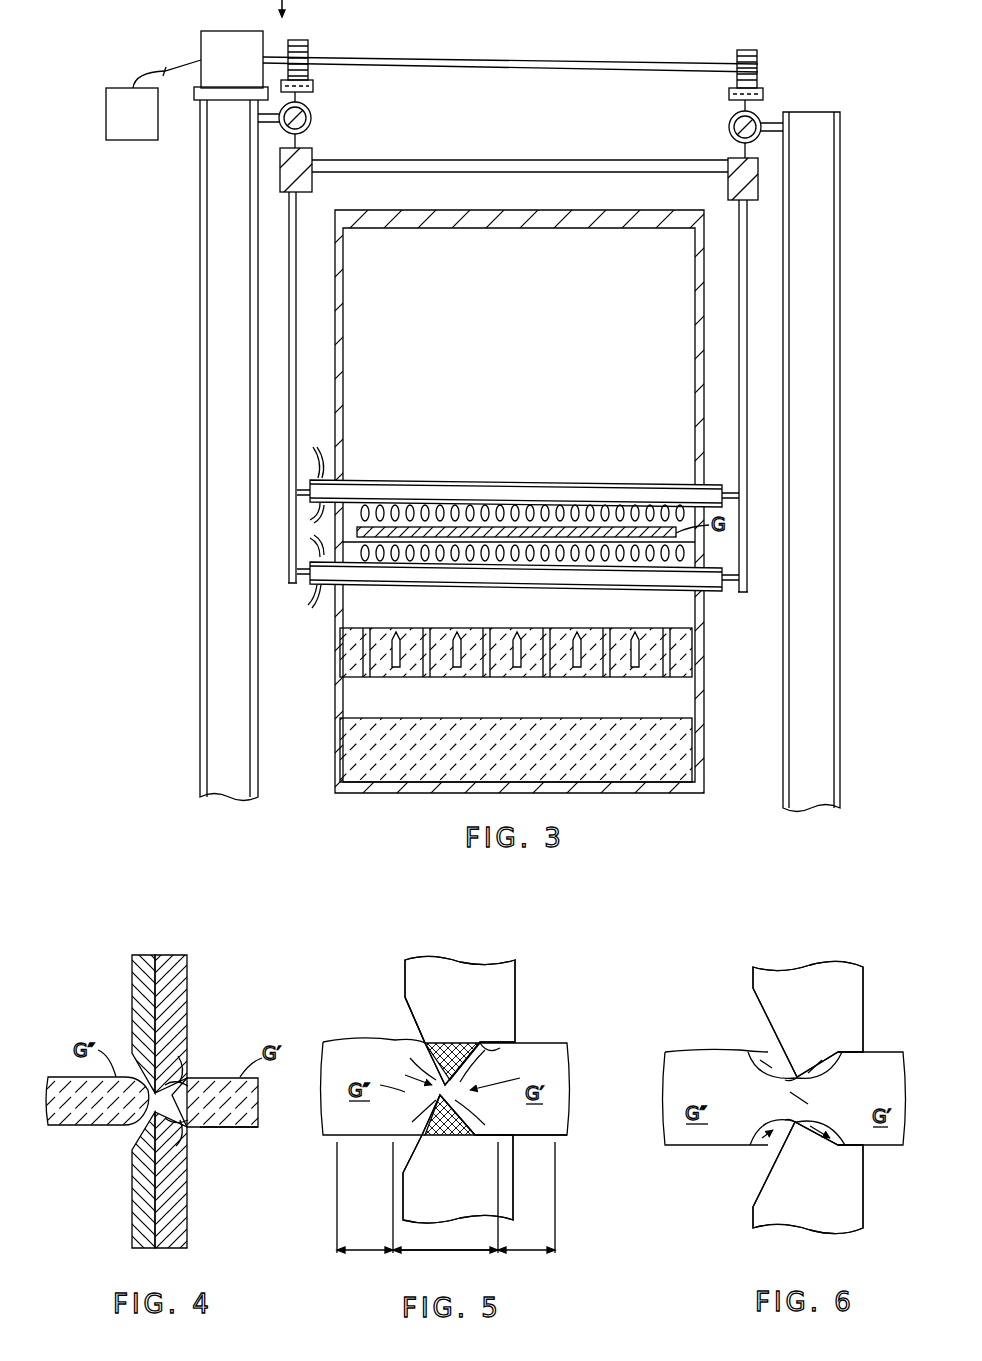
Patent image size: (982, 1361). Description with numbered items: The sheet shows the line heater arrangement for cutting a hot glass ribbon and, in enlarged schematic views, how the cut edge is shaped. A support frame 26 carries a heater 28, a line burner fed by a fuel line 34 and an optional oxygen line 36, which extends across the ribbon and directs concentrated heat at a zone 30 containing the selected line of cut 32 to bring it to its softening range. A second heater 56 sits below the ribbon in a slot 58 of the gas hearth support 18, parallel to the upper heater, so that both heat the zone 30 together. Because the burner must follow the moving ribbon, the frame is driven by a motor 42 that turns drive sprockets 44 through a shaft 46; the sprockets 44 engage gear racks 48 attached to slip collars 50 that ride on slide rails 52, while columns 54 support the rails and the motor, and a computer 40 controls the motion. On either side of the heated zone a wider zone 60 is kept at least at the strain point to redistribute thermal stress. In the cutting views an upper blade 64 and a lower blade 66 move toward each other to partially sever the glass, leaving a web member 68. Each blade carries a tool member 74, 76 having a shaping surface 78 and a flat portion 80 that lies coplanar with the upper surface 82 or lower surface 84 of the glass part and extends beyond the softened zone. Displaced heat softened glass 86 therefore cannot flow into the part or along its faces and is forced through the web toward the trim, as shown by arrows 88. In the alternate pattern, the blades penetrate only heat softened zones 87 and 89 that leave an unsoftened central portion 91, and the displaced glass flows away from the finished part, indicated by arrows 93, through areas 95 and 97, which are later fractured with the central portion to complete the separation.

In FIG. 3, the gas hearth support 18 is at (537, 677).
In FIG. 3, the support frame 26 is at (298, 215).
In FIG. 3, the heater 28 is at (530, 483).
In FIG. 5, the zone 30 is at (445, 1237).
In FIG. 3, the line of cut 32 is at (608, 527).
In FIG. 3, the fuel line 34 is at (312, 462).
In FIG. 3, the oxygen line 36 is at (310, 548).
In FIG. 3, the computer 40 is at (145, 124).
In FIG. 3, the motor 42 is at (201, 42).
In FIG. 3, the drive sprocket 44 is at (297, 40).
In FIG. 3, the shaft 46 is at (545, 57).
In FIG. 3, the gear rack 48 is at (313, 88).
In FIG. 3, the slip collar 50 is at (311, 114).
In FIG. 3, the slide rail 52 is at (303, 128).
In FIG. 3, the column 54 is at (200, 700).
In FIG. 3, the second heater 56 is at (567, 586).
In FIG. 3, the slot 58 is at (465, 628).
In FIG. 5, the zone 60 is at (446, 1197).
In FIG. 6, the zone 60 is at (708, 1082).
In FIG. 4, the upper blade 64 is at (132, 975).
In FIG. 5, the upper blade 64 is at (517, 972).
In FIG. 6, the upper blade 64 is at (873, 947).
In FIG. 4, the lower blade 66 is at (132, 1196).
In FIG. 5, the lower blade 66 is at (513, 1183).
In FIG. 6, the lower blade 66 is at (863, 1203).
In FIG. 4, the web member 68 is at (120, 1123).
In FIG. 4, the tool member 74 is at (187, 985).
In FIG. 5, the tool member 74 is at (497, 1016).
In FIG. 6, the tool member 74 is at (808, 1006).
In FIG. 4, the tool member 76 is at (187, 1226).
In FIG. 5, the tool member 76 is at (508, 1159).
In FIG. 6, the tool member 76 is at (808, 1193).
In FIG. 4, the shaping surface 78 is at (178, 1060).
In FIG. 5, the shaping surface 78 is at (477, 1055).
In FIG. 4, the flat portion 80 is at (190, 1082).
In FIG. 5, the flat portion 80 is at (505, 1048).
In FIG. 4, the upper surface 82 is at (258, 1080).
In FIG. 5, the upper surface 82 is at (565, 1044).
In FIG. 4, the lower surface 84 is at (250, 1127).
In FIG. 5, the lower surface 84 is at (533, 1138).
In FIG. 5, the heat softened glass 86 is at (412, 1022).
In FIG. 6, the heat softened zone 87 is at (833, 1058).
In FIG. 5, the arrows 88 is at (467, 1107).
In FIG. 6, the heat softened zone 89 is at (833, 1140).
In FIG. 6, the central portion 91 is at (803, 1097).
In FIG. 6, the arrows 93 is at (773, 1045).
In FIG. 6, the area 95 is at (787, 1079).
In FIG. 6, the area 97 is at (790, 1116).